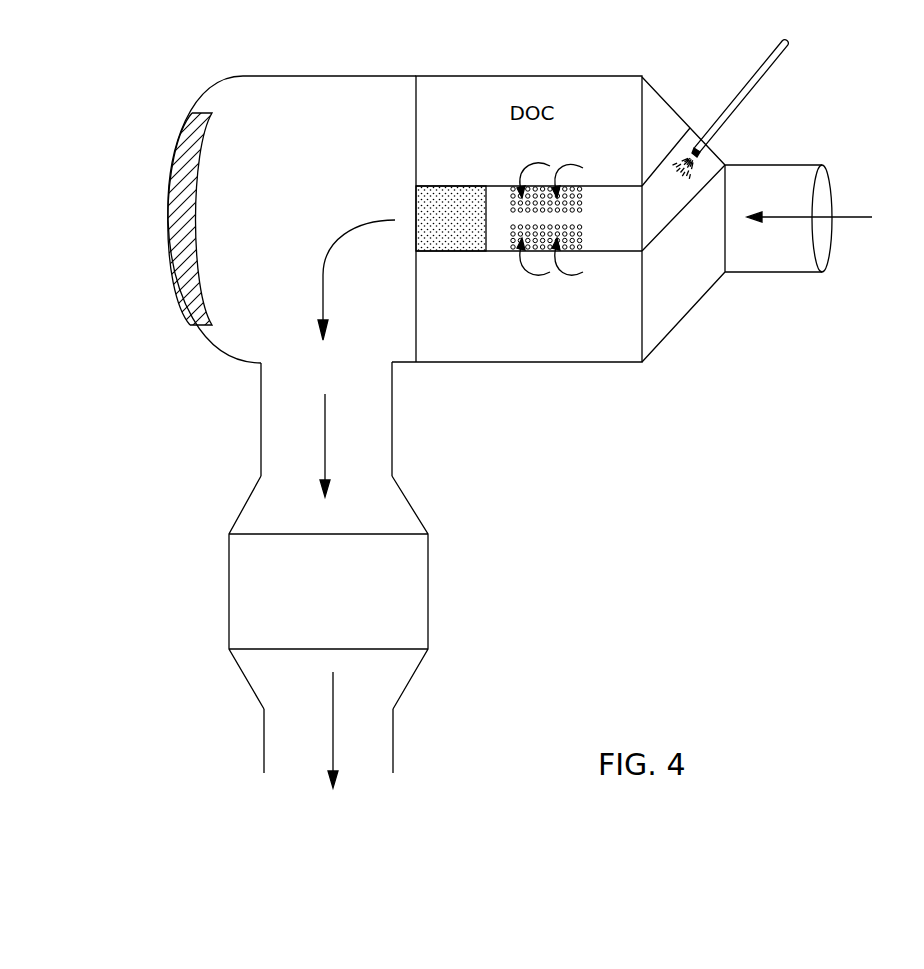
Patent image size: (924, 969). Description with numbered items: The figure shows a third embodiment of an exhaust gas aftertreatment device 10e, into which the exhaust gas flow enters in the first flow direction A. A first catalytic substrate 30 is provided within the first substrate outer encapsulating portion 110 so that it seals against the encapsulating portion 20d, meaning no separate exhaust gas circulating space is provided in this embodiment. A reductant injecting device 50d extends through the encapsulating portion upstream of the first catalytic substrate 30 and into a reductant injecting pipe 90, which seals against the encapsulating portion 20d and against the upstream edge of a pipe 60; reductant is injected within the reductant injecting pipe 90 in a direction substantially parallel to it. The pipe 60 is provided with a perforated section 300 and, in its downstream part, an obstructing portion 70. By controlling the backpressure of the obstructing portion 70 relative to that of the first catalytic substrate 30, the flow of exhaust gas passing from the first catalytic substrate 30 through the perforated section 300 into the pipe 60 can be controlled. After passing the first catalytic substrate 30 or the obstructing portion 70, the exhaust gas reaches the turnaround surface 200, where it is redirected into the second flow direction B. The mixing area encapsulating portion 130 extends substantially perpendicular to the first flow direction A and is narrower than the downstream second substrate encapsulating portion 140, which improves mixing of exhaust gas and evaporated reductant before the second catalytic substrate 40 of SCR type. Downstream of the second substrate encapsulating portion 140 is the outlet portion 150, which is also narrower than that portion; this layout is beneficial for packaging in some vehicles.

The exhaust gas aftertreatment device 10e is at (130, 110).
The turnaround surface 200 is at (176, 238).
The perforated section 300 is at (580, 197).
The reductant injecting device 50d is at (743, 97).
The reductant injecting pipe 90 is at (687, 197).
The encapsulating portion 20d is at (683, 320).
The first flow direction A is at (872, 217).
The pipe 60 is at (599, 233).
The first catalytic substrate 30 is at (523, 331).
The obstructing portion 70 is at (452, 233).
The first substrate outer encapsulating portion 110 is at (552, 362).
The mixing area encapsulating portion 130 is at (261, 431).
The second substrate encapsulating portion 140 is at (229, 594).
The second catalytic substrate 40 is at (317, 638).
The outlet portion 150 is at (264, 735).
The second flow direction B is at (333, 724).